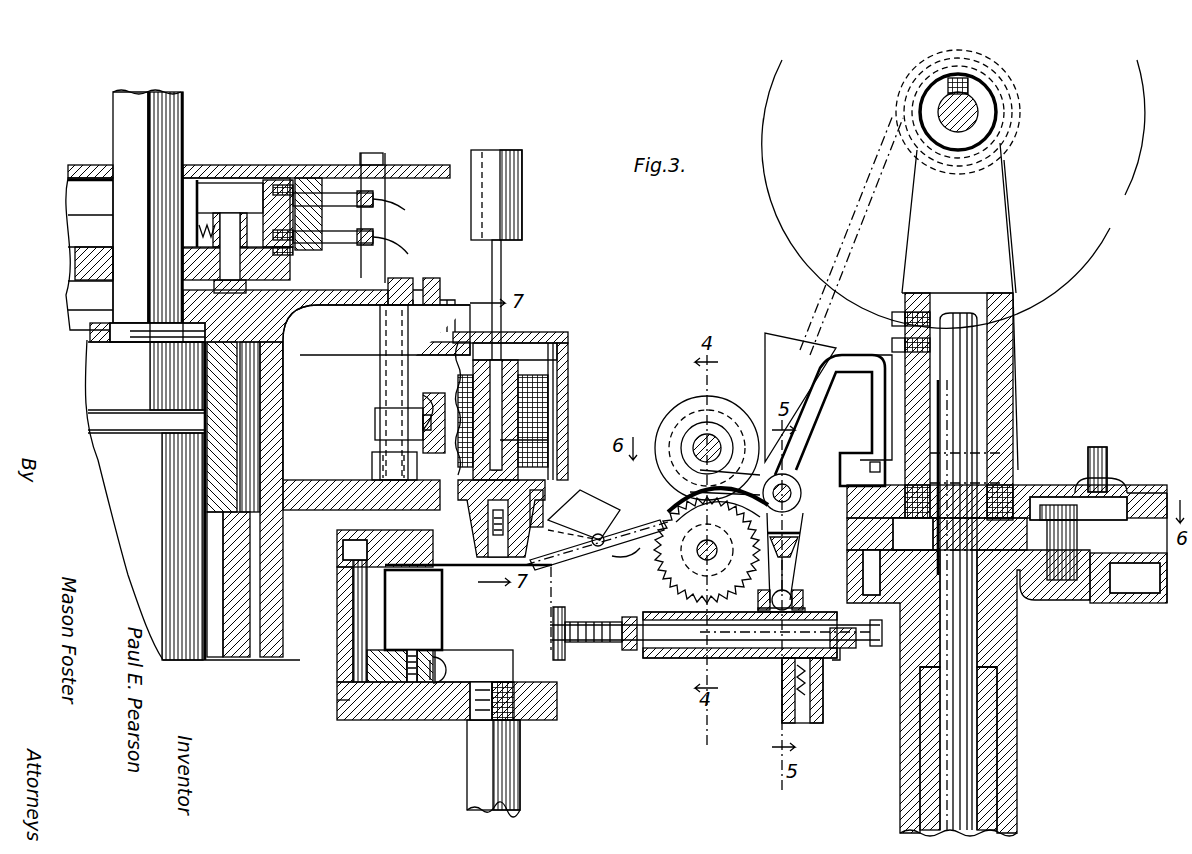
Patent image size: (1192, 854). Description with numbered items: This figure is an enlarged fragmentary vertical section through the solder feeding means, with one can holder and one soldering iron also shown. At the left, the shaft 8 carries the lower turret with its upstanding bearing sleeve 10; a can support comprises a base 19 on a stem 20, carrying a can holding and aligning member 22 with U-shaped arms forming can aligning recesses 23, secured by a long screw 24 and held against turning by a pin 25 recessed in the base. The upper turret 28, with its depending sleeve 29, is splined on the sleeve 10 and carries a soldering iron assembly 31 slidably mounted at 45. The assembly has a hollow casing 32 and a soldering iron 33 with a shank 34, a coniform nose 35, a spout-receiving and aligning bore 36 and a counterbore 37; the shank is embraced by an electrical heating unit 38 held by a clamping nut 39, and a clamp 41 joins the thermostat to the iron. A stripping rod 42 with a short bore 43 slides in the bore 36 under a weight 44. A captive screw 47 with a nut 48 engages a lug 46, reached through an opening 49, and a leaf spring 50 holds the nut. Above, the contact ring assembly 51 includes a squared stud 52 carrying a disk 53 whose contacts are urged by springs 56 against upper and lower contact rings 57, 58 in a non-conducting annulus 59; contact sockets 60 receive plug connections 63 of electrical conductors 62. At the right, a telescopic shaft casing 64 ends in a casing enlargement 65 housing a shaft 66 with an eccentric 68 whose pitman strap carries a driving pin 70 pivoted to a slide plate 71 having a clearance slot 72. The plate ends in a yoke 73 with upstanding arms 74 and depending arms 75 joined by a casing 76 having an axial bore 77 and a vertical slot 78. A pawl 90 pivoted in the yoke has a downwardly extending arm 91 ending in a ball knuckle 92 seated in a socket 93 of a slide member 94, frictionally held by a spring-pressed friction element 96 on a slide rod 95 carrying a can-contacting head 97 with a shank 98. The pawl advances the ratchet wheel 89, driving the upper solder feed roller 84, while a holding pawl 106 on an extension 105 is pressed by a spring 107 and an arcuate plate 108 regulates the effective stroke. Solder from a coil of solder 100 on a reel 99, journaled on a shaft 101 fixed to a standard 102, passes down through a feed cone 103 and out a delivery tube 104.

The shaft 8 is at (146, 501).
The upstanding bearing sleeve 10 is at (240, 570).
The base 19 is at (380, 712).
The stem 20 is at (483, 770).
The can holding and aligning member 22 is at (340, 664).
The can aligning recesses 23 is at (440, 700).
The screw 24 is at (356, 616).
The pin 25 is at (340, 706).
The upper turret 28 is at (300, 300).
The depending sleeve 29 is at (300, 515).
The soldering iron assembly 31 is at (558, 390).
The hollow casing 32 is at (570, 356).
The soldering iron 33 is at (540, 498).
The shank 34 is at (535, 408).
The coniform nose 35 is at (468, 607).
The spout-receiving and aligning bore 36 is at (555, 442).
The counterbore 37 is at (460, 575).
The electrical heating unit 38 is at (520, 427).
The clamping nut 39 is at (530, 338).
The clamp 41 is at (445, 575).
The rod 42 is at (500, 258).
The short bore 43 is at (490, 516).
The weight 44 is at (505, 150).
The slidable mounting 45 is at (440, 320).
The lug 46 is at (372, 462).
The captive screw 47 is at (380, 331).
The nut 48 is at (380, 410).
The opening 49 is at (400, 290).
The leaf spring 50 is at (395, 421).
The contact ring assembly 51 is at (81, 158).
The squared stud 52 is at (126, 123).
The disk 53 is at (78, 270).
The springs 56 is at (218, 210).
The upper contact ring 57 is at (250, 185).
The lower contact ring 58 is at (270, 190).
The annulus 59 is at (320, 175).
The upper contact sockets 60 is at (311, 220).
The electrical conductors 62 is at (392, 225).
The plug connections 63 is at (384, 195).
The telescopic shaft casing 64 is at (1017, 808).
The casing enlargement 65 is at (1145, 604).
The shaft 66 is at (958, 676).
The eccentric 68 is at (1030, 600).
The driving pin 70 is at (1100, 495).
The slide plate 71 is at (1150, 500).
The clearance slot 72 is at (1025, 487).
The yoke 73 is at (805, 498).
The upstanding arms 74 is at (830, 420).
The depending arms 75 is at (778, 580).
The casing 76 is at (770, 660).
The axial bore 77 is at (660, 660).
The vertical slot 78 is at (755, 660).
The upper solder feed roller 84 is at (690, 410).
The ratchet wheel 89 is at (619, 547).
The bell crank ratchet feed lever or pawl 90 is at (730, 455).
The downwardly extending arm 91 is at (802, 572).
The ball knuckle 92 is at (707, 550).
The socket 93 is at (793, 602).
The slide member 94 is at (852, 649).
The slide rod 95 is at (690, 660).
The spring-pressed friction element 96 is at (840, 660).
The can-contacting head 97 is at (565, 618).
The shank 98 is at (587, 638).
The reel 99 is at (1108, 240).
The coil of solder 100 is at (1010, 136).
The shaft 101 is at (970, 110).
The standard 102 is at (959, 218).
The feed cone 103 is at (834, 288).
The delivery tube 104 is at (552, 507).
The extension 105 is at (632, 566).
The pawl 106 is at (596, 550).
The spring 107 is at (612, 498).
The arcuate plate 108 is at (718, 511).